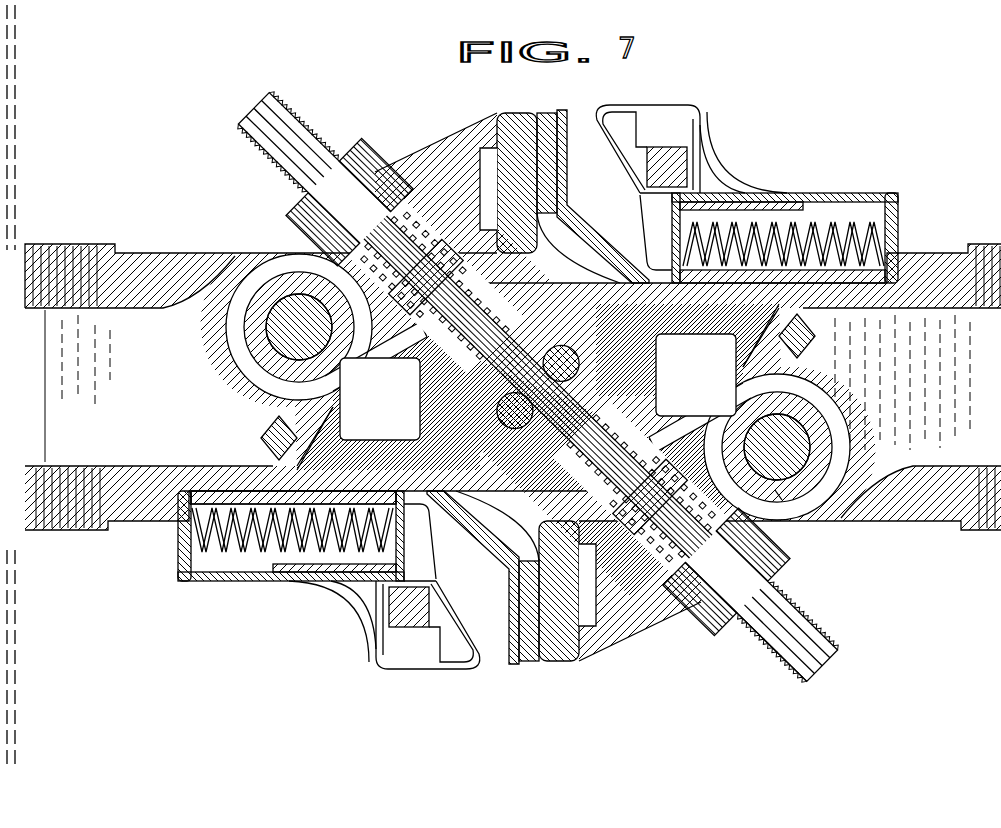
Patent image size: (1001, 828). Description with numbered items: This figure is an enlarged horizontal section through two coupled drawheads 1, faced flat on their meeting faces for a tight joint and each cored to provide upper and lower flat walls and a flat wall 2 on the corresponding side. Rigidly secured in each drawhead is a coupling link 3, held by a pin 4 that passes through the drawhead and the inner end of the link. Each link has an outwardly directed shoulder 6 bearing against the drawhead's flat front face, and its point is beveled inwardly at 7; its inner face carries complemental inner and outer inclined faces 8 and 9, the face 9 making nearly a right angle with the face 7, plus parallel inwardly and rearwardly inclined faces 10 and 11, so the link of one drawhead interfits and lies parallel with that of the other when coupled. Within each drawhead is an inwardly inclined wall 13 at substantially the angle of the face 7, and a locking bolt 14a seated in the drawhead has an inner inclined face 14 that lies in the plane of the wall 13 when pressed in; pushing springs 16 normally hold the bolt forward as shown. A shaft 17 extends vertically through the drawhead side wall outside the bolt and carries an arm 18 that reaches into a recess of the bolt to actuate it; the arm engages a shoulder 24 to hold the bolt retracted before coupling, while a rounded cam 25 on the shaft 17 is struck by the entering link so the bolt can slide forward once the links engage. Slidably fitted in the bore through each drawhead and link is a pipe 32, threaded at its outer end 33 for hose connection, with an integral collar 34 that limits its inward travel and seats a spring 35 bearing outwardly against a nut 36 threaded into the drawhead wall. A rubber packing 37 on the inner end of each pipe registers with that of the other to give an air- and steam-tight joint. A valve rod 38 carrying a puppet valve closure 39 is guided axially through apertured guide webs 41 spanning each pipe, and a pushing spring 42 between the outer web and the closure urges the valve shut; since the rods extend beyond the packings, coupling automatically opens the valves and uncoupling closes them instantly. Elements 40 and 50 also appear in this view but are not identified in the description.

The drawhead 1 is at (445, 147).
The flat wall 2 is at (478, 230).
The coupling link 3 is at (230, 282).
The pin 4 is at (262, 300).
The shoulder 6 is at (543, 220).
The beveled point 7 is at (753, 277).
The inner inclined face 8 is at (290, 320).
The outer inclined face 9 is at (280, 240).
The inclined face 10 is at (660, 613).
The inclined face 11 is at (632, 372).
The inwardly inclined wall 13 is at (803, 277).
The inner inclined face 14 is at (593, 227).
The locking bolt 14a is at (732, 203).
The pushing springs 16 is at (890, 213).
The shaft 17 is at (673, 157).
The arm or lever 18 is at (660, 230).
The shoulder 24 is at (317, 573).
The rounded cam 25 is at (600, 140).
The pipe 32 is at (757, 640).
The threaded outer end 33 is at (793, 677).
The integral collar 34 is at (617, 550).
The spring 35 is at (770, 557).
The nut 36 is at (793, 590).
The packing 37 is at (482, 277).
The valve rod 38 is at (290, 173).
The puppet valve closure 39 is at (433, 280).
The stem 40 is at (586, 381).
The guide webs 41 is at (540, 428).
The pushing spring 42 is at (423, 247).
The passage 50 is at (790, 508).